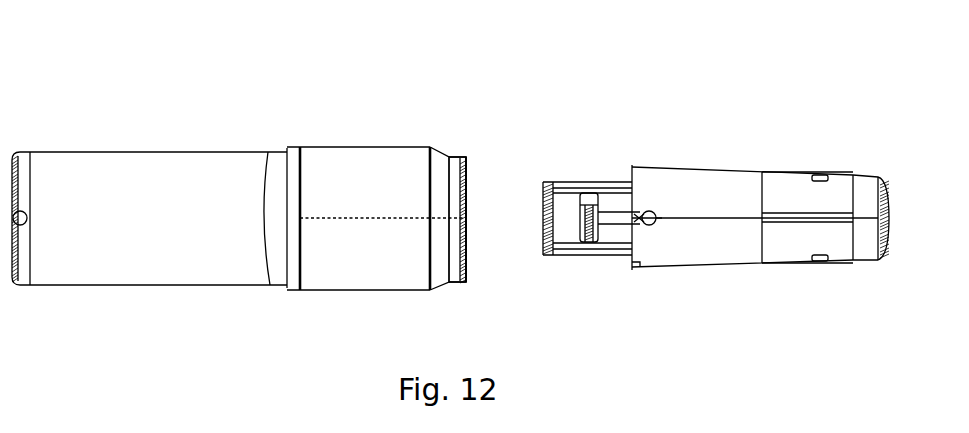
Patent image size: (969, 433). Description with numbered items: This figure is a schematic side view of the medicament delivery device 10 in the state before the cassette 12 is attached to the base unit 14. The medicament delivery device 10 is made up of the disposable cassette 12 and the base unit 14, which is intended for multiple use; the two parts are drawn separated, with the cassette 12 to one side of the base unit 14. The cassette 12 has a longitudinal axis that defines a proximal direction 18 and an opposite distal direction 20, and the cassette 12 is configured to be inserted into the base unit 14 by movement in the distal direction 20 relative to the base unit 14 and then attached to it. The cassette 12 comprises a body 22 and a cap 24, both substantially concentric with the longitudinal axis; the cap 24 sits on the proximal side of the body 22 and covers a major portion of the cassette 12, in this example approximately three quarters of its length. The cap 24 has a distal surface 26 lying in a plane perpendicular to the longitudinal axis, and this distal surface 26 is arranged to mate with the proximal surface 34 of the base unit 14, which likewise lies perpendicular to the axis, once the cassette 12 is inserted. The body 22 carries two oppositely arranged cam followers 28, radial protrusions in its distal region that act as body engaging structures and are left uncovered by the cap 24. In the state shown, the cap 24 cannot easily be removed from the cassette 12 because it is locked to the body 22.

The medicament delivery device 10 is at (318, 68).
The cassette 12 is at (760, 143).
The base unit 14 is at (167, 231).
The proximal direction 18 is at (282, 335).
The distal direction 20 is at (170, 335).
The body 22 is at (575, 181).
The cap 24 is at (703, 192).
The distal surface 26 is at (633, 262).
The cam followers 28 is at (563, 226).
The proximal surface 34 is at (466, 168).